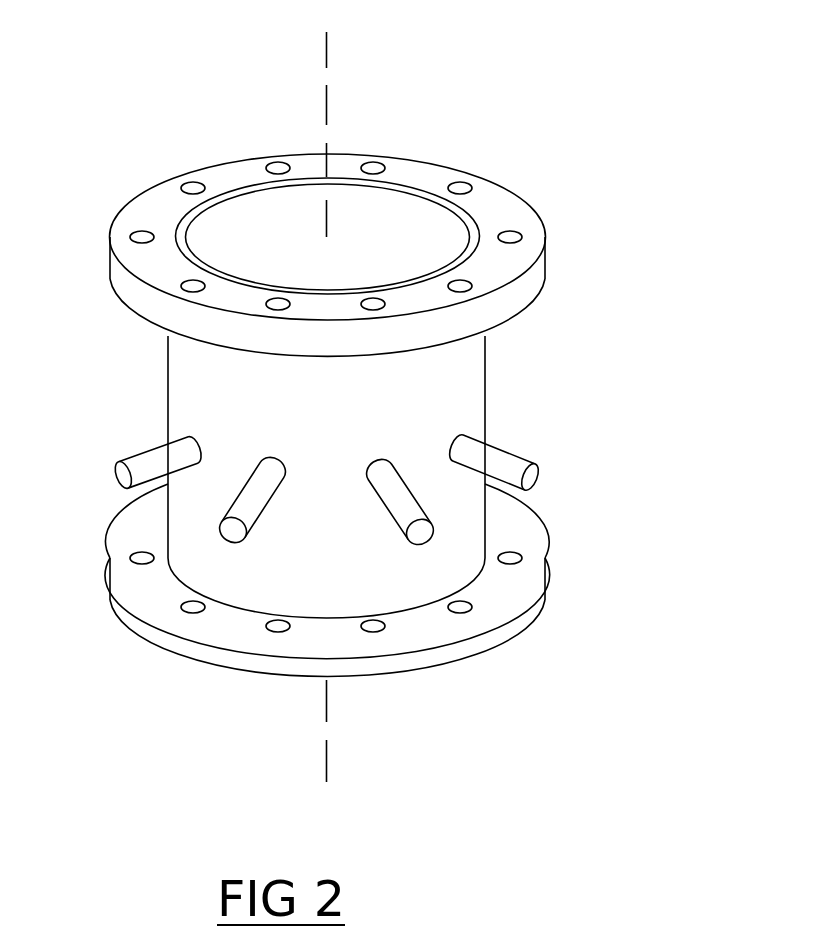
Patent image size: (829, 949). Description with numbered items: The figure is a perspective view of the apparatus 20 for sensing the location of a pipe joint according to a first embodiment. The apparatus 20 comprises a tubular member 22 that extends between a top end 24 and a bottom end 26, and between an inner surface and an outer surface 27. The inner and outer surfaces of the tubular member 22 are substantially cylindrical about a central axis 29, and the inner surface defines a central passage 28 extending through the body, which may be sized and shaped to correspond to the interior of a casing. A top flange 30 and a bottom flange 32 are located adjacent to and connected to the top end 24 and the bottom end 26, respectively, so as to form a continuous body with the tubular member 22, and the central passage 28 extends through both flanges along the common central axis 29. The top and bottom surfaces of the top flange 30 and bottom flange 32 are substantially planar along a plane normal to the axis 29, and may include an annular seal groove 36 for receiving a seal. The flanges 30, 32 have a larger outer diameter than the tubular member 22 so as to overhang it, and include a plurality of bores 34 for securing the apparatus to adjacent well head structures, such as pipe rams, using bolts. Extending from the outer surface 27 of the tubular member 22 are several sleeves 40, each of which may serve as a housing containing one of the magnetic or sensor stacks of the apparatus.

The apparatus 20 is at (455, 108).
The tubular member 22 is at (367, 550).
The top end 24 is at (355, 383).
The bottom end 26 is at (354, 580).
The outer surface 27 is at (265, 552).
The central passage 28 is at (275, 243).
The central axis 29 is at (327, 47).
The top flange 30 is at (544, 237).
The bottom flange 32 is at (544, 587).
The bores 34 is at (508, 231).
The seal groove 36 is at (182, 218).
The sleeve 40 is at (253, 478).